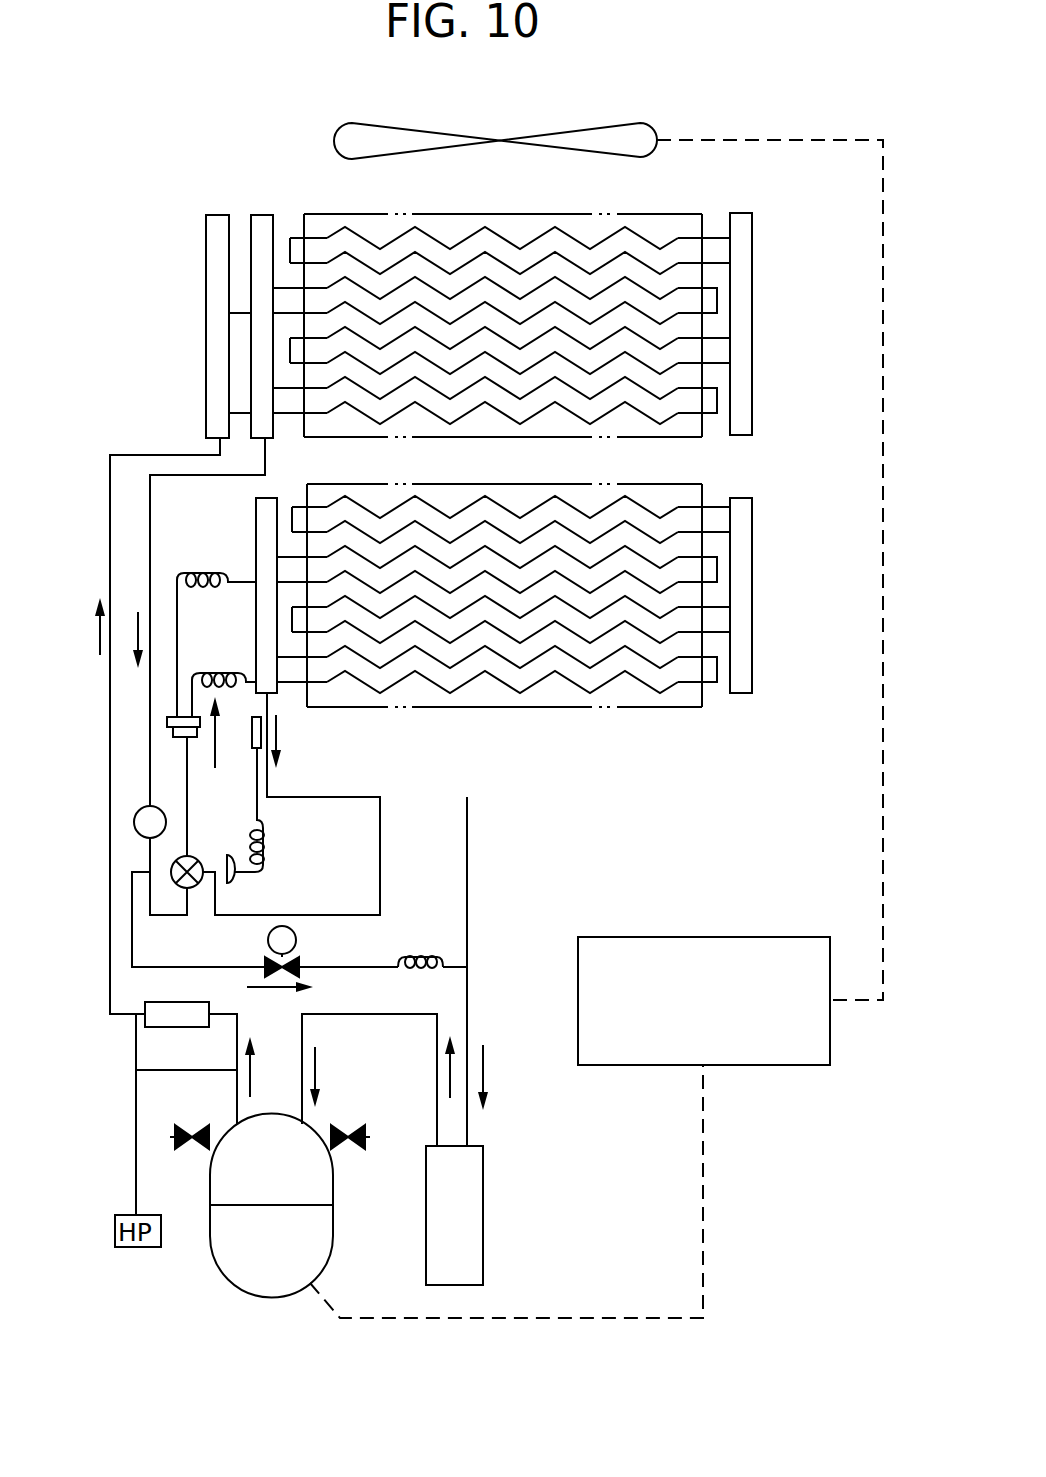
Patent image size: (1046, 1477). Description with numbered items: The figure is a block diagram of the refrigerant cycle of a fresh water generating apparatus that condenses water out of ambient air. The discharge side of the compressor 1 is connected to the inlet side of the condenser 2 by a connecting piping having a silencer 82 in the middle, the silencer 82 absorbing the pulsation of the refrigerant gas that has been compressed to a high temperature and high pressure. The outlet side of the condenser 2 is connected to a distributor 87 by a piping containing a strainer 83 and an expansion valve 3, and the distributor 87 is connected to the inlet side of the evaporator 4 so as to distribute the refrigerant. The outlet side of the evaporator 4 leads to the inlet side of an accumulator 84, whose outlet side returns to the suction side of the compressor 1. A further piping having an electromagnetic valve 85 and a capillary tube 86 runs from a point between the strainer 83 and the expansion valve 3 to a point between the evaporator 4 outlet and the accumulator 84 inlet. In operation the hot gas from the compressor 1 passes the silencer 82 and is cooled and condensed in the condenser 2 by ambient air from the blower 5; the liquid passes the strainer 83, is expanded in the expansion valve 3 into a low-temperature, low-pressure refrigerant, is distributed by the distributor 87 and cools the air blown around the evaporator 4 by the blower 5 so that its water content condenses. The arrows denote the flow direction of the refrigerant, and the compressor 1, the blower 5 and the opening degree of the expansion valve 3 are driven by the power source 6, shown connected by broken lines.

The compressor 1 is at (237, 1278).
The condenser 2 is at (688, 437).
The expansion valve 3 is at (171, 880).
The evaporator 4 is at (640, 708).
The blower 5 is at (658, 128).
The power source 6 is at (615, 965).
The silencer 82 is at (160, 1020).
The strainer 83 is at (134, 818).
The accumulator 84 is at (462, 1221).
The electromagnetic valve 85 is at (298, 946).
The capillary tube 86 is at (435, 955).
The distributor 87 is at (167, 722).